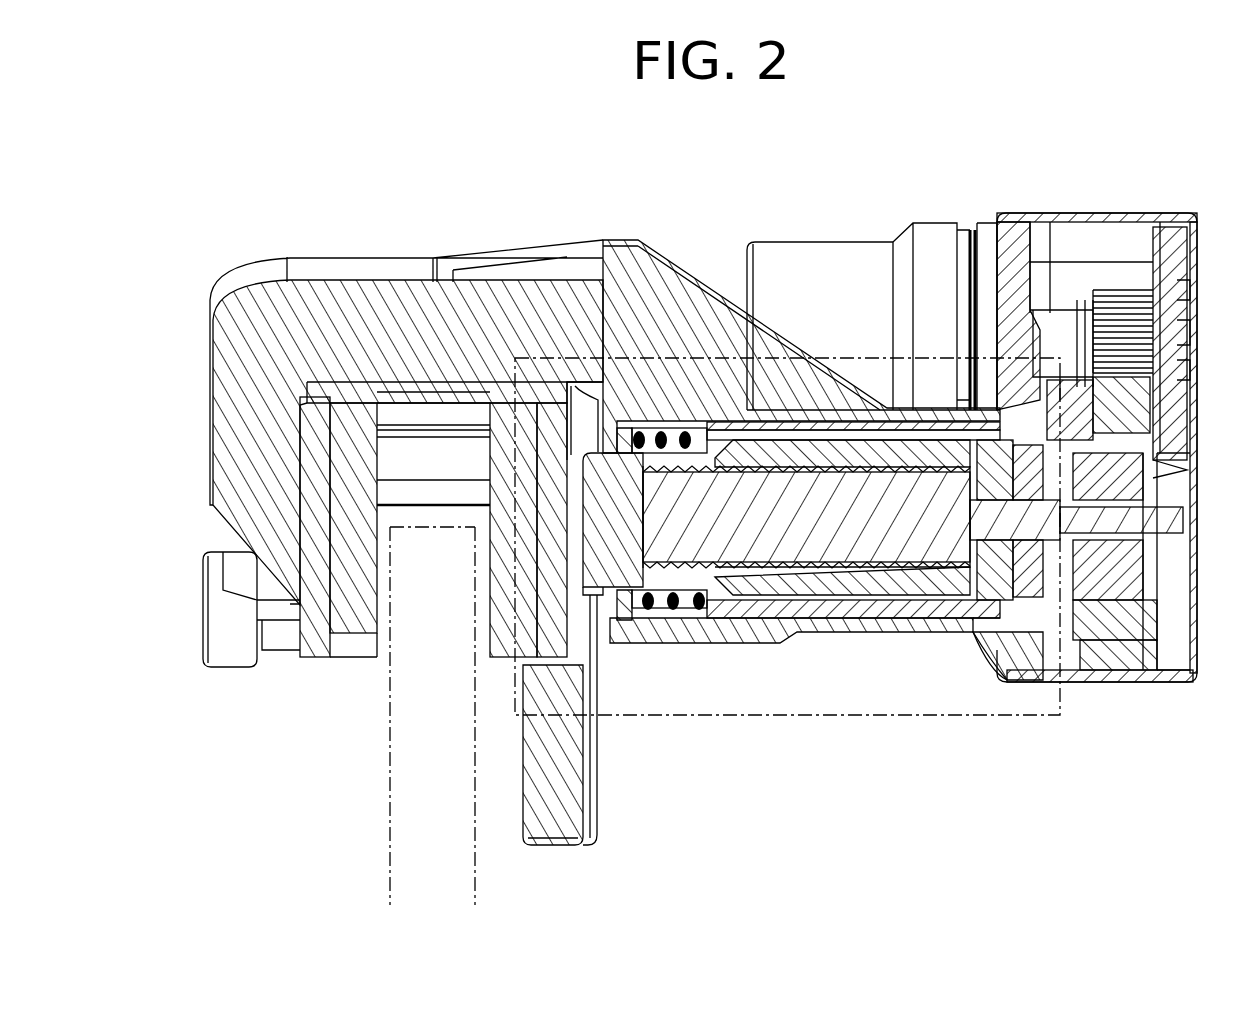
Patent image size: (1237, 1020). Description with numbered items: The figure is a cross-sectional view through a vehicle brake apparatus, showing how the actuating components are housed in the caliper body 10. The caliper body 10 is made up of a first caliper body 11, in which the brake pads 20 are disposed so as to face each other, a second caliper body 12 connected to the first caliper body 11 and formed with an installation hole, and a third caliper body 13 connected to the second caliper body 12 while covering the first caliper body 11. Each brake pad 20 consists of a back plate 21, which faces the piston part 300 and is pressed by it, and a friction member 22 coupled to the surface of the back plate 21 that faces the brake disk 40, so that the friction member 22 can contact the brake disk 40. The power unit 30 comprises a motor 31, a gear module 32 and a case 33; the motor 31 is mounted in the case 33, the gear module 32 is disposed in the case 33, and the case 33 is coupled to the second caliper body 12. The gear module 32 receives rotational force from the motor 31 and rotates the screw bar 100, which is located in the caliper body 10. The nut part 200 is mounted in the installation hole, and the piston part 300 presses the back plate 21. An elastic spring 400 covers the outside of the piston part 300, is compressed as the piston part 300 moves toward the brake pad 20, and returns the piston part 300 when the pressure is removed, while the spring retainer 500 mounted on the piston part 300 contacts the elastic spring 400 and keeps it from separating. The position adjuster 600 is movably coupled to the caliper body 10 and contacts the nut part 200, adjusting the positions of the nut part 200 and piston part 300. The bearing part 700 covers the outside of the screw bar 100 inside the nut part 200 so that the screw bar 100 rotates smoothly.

The caliper body 10 is at (626, 525).
The first caliper body 11 is at (568, 795).
The second caliper body 12 is at (661, 300).
The third caliper body 13 is at (385, 317).
The brake pad 20 is at (385, 595).
The back plate 21 is at (537, 633).
The friction member 22 is at (500, 607).
The power unit 30 is at (1177, 137).
The motor 31 is at (933, 232).
The gear module 32 is at (1168, 267).
The case 33 is at (1097, 223).
The brake disk 40 is at (387, 852).
The screw bar 100 is at (908, 568).
The nut part 200 is at (853, 580).
The piston part 300 is at (777, 612).
The elastic spring 400 is at (702, 612).
The spring retainer 500 is at (630, 612).
The position adjuster 600 is at (1030, 607).
The bearing part 700 is at (993, 605).